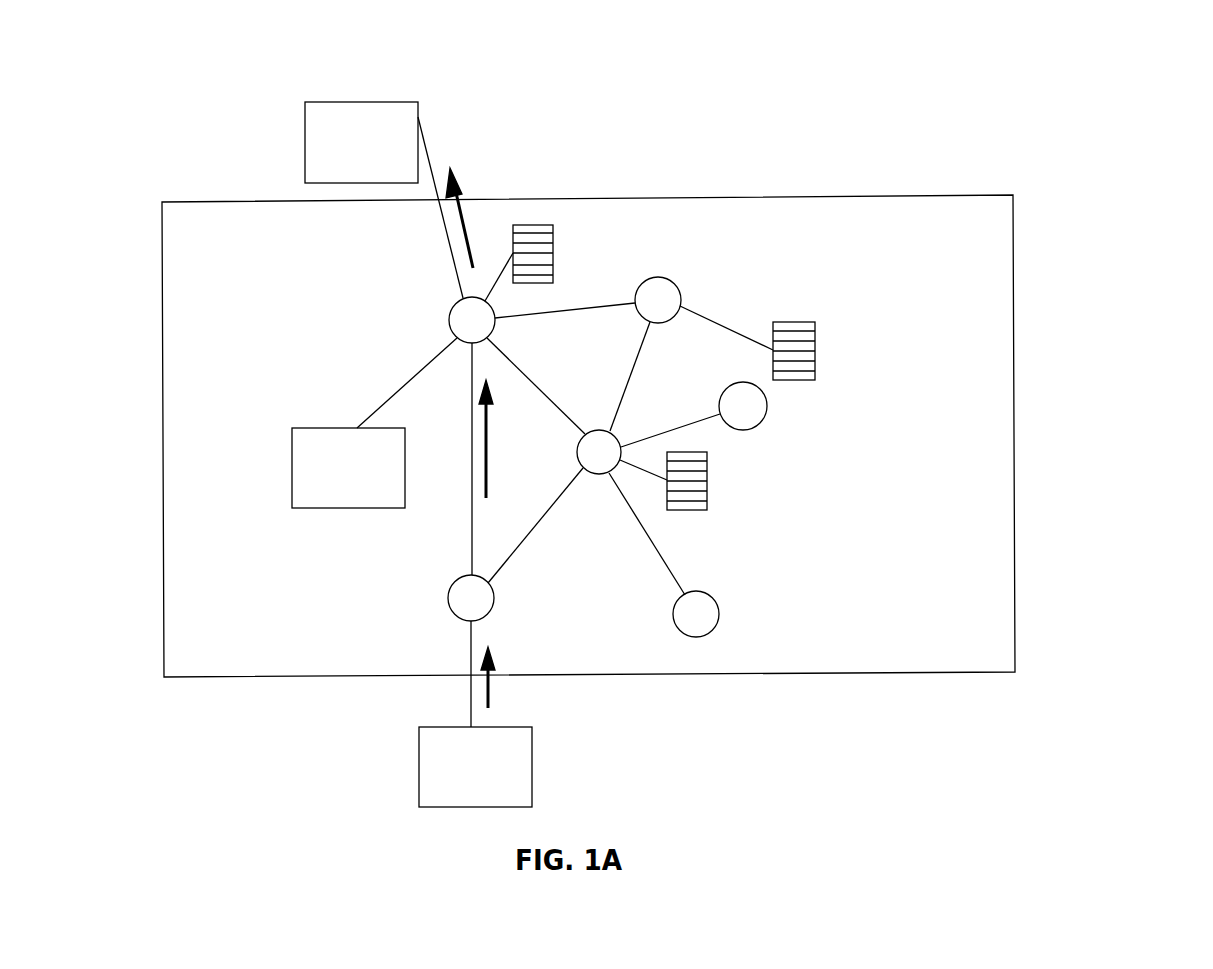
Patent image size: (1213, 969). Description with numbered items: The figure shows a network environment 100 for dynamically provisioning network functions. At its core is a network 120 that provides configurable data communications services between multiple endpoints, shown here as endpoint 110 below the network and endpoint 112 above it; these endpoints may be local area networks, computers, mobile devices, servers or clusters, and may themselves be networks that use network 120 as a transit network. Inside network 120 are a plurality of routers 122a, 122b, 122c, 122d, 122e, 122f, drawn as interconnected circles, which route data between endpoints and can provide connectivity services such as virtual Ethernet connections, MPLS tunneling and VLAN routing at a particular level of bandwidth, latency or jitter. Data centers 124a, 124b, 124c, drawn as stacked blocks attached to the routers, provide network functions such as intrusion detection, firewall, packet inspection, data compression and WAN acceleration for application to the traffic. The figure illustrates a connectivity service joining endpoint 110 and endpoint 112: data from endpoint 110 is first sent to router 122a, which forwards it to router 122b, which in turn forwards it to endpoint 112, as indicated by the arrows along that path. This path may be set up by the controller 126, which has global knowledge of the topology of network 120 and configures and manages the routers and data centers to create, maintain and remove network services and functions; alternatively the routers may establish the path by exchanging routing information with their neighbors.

The network environment 100 is at (1197, 72).
The endpoint 110 is at (532, 768).
The endpoint 112 is at (358, 102).
The network 120 is at (850, 195).
The router 122a is at (448, 598).
The router 122b is at (449, 320).
The router 122c is at (615, 425).
The router 122d is at (681, 295).
The router 122e is at (713, 596).
The router 122f is at (767, 404).
The data center 124a is at (707, 482).
The data center 124b is at (553, 252).
The data center 124c is at (815, 350).
The controller 126 is at (348, 468).